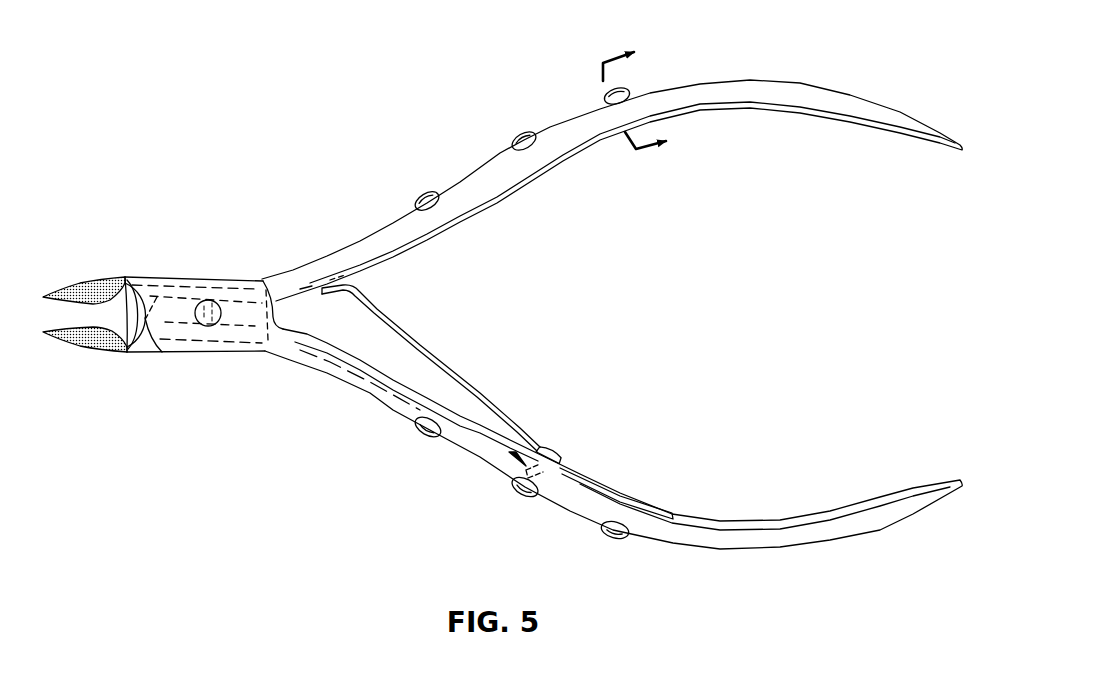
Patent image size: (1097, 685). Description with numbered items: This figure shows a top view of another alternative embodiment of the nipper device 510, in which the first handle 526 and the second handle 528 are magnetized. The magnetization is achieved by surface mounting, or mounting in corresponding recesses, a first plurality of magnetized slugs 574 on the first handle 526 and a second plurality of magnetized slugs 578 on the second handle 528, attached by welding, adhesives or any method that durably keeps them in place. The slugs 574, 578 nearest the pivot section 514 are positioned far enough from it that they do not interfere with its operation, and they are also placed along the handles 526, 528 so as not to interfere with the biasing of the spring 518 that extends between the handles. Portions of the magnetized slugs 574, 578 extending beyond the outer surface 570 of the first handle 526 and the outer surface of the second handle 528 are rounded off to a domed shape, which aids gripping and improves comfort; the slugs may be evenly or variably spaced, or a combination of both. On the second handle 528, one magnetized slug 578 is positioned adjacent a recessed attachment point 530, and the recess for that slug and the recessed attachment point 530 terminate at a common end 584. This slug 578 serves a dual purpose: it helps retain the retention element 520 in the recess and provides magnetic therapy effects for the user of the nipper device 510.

The nipper device 510 is at (211, 122).
The pivot section 514 is at (207, 368).
The spring 518 is at (413, 330).
The retention element 520 is at (560, 446).
The first handle 526 is at (612, 166).
The outer surface 570 is at (797, 85).
The second handle 528 is at (797, 548).
The recessed attachment point 530 is at (572, 472).
The first plurality of magnetized slugs 574 is at (420, 193).
The second plurality of magnetized slugs 578 is at (420, 440).
The common end 584 is at (511, 446).